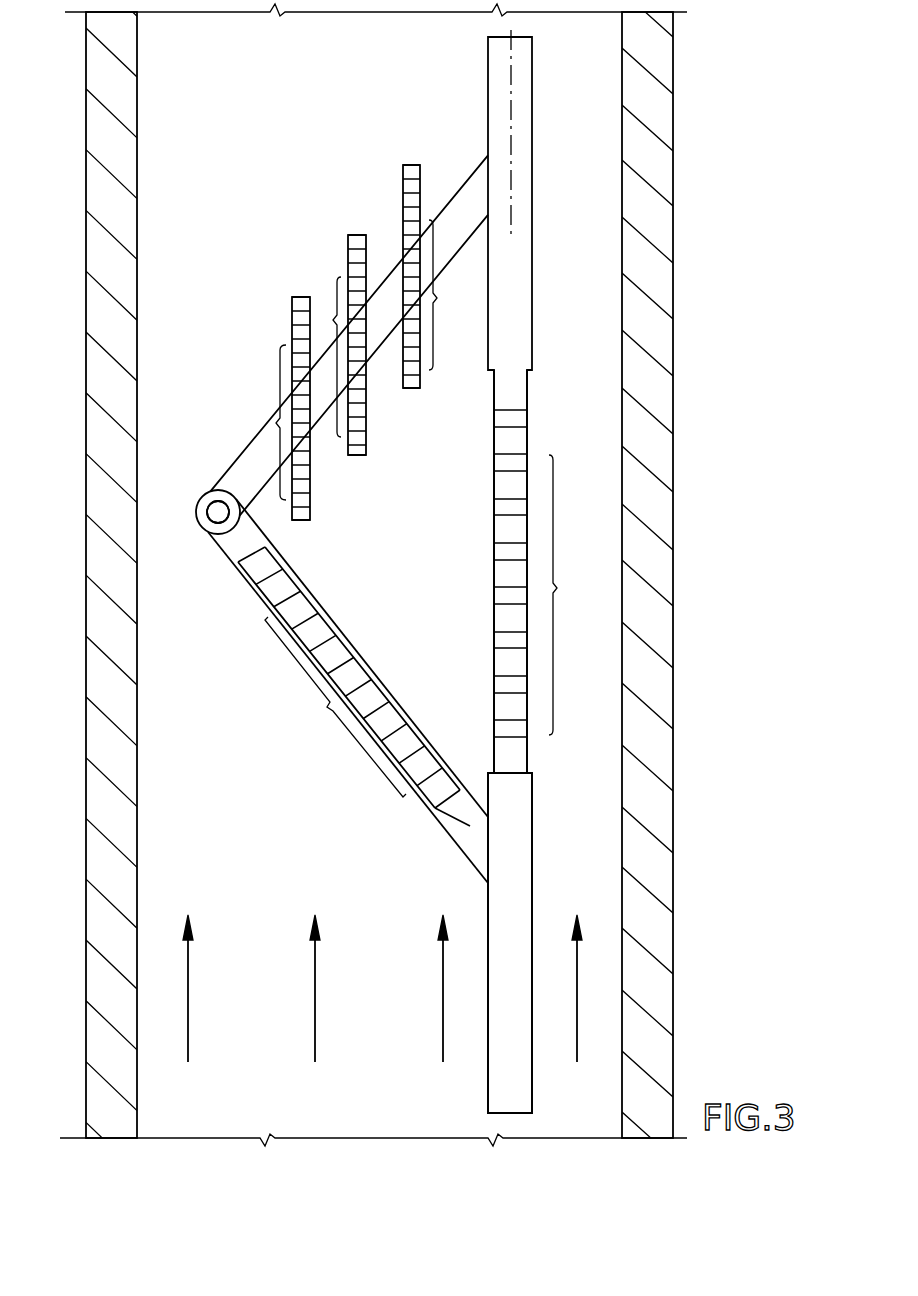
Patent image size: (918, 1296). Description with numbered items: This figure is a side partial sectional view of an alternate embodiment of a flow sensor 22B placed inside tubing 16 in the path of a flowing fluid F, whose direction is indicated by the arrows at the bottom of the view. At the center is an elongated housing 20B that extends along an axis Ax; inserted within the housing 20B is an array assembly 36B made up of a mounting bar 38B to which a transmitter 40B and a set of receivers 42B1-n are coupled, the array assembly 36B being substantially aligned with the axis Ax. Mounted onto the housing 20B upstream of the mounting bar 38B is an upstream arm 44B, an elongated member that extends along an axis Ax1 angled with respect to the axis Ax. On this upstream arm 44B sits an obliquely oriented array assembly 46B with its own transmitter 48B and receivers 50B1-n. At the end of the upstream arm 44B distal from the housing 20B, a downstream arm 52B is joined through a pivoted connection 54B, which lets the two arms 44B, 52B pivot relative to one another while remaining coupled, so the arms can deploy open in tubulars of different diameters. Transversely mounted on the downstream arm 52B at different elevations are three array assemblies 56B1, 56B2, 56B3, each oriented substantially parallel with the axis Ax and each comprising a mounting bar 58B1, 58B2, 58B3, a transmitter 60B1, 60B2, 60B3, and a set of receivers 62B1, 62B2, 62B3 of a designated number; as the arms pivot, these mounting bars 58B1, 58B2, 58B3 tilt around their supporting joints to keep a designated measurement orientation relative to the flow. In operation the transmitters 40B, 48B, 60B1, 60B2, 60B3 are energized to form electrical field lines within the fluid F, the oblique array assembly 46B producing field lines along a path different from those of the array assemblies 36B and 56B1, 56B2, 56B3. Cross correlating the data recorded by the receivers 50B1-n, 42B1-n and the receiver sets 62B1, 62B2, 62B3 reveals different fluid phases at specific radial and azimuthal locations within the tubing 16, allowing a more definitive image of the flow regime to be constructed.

The tubing 16 is at (675, 120).
The housing 20B is at (535, 833).
The axis of housing Ax is at (514, 126).
The mounting bar 38B is at (524, 765).
The transmitter 40B is at (522, 420).
The receivers 42B1-n is at (565, 588).
The array assembly 36B is at (476, 578).
The downstream arm 52B is at (213, 486).
The pivoted connection 54B is at (196, 494).
The flow sensor 22B is at (297, 165).
The transmitter 60B1 is at (290, 318).
The transmitter 60B2 is at (353, 258).
The transmitter 60B3 is at (423, 188).
The array assembly 56B1 is at (262, 337).
The array assembly 56B2 is at (323, 255).
The array assembly 56B3 is at (392, 190).
The mounting bar 58B1 is at (310, 520).
The mounting bar 58B2 is at (358, 456).
The mounting bar 58B3 is at (418, 390).
The set of receivers 62B1 is at (264, 418).
The set of receivers 62B2 is at (325, 315).
The set of receivers 62B3 is at (436, 298).
The array assembly 46B is at (238, 640).
The axis of upstream arm Ax1 is at (467, 827).
The transmitter 48B is at (256, 596).
The receivers 50B1-n is at (325, 718).
The upstream arm 44B is at (433, 818).
The fluid F is at (317, 1018).